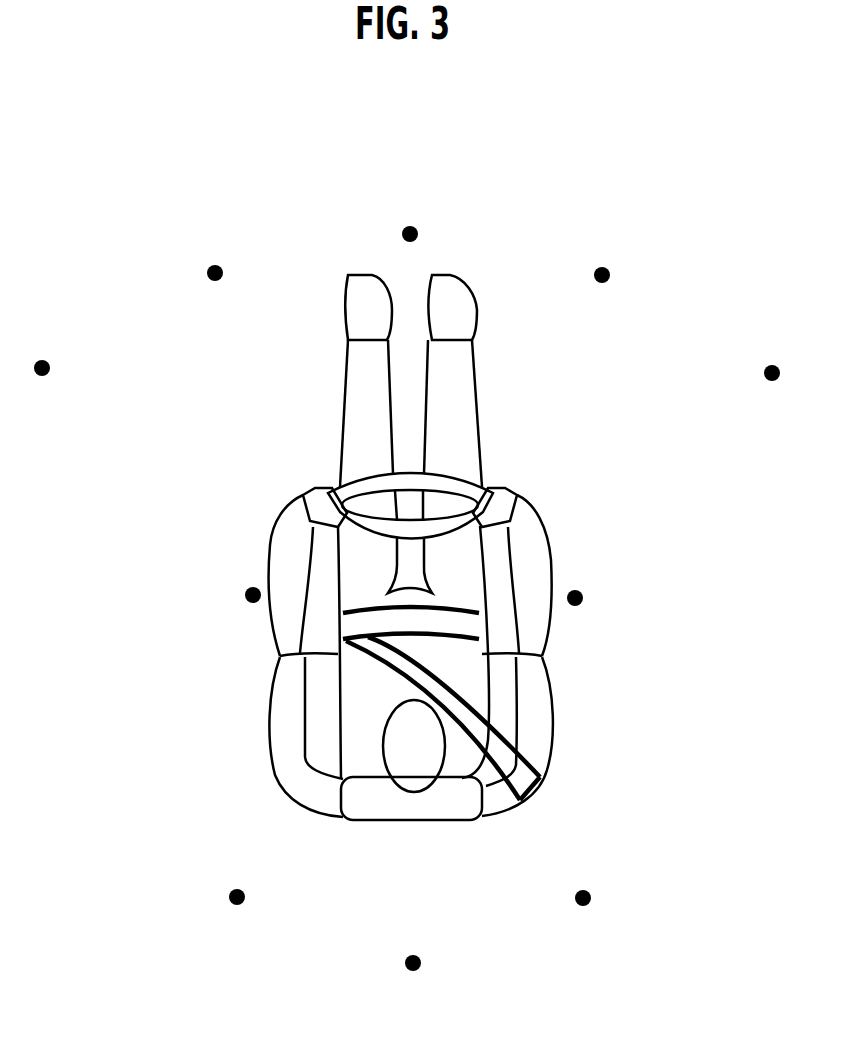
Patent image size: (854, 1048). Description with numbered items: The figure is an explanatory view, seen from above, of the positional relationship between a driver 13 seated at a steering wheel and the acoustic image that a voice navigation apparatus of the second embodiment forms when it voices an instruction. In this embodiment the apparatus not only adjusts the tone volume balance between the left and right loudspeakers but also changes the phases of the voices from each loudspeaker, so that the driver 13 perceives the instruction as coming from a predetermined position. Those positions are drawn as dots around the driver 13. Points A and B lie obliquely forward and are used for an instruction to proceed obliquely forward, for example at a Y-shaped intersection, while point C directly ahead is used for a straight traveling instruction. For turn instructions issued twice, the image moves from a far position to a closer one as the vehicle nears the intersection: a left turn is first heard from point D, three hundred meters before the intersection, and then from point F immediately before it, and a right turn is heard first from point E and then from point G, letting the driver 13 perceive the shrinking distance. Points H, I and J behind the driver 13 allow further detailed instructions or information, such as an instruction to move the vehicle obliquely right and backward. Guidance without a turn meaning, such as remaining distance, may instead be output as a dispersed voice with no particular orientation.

The driver 13 is at (520, 717).
The point A is at (214, 255).
The point B is at (602, 256).
The point C is at (410, 216).
The point D is at (44, 353).
The point E is at (774, 352).
The point F is at (239, 592).
The point G is at (590, 597).
The point H is at (237, 919).
The point I is at (413, 985).
The point J is at (582, 919).